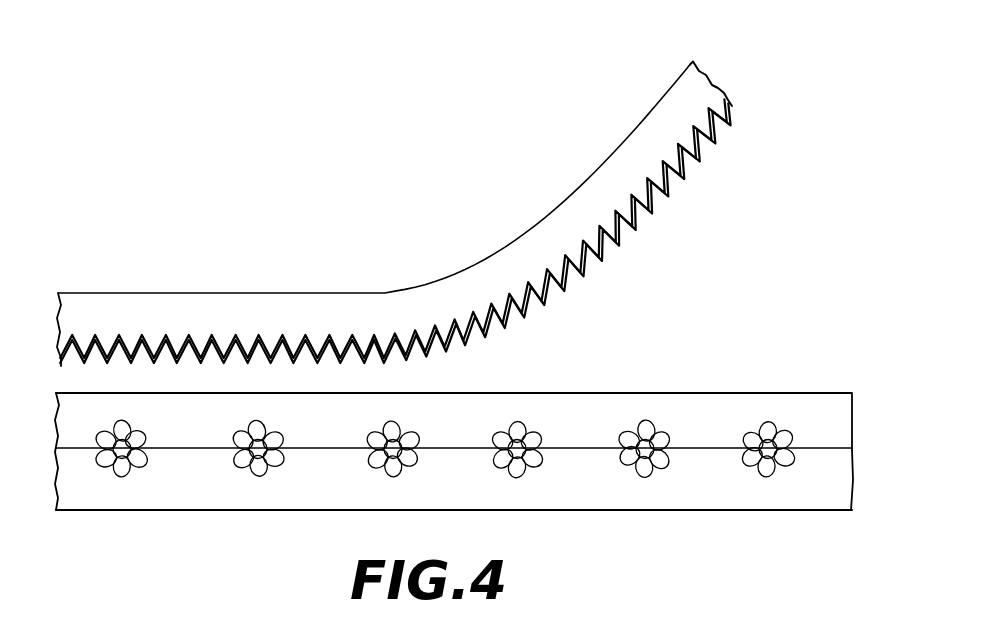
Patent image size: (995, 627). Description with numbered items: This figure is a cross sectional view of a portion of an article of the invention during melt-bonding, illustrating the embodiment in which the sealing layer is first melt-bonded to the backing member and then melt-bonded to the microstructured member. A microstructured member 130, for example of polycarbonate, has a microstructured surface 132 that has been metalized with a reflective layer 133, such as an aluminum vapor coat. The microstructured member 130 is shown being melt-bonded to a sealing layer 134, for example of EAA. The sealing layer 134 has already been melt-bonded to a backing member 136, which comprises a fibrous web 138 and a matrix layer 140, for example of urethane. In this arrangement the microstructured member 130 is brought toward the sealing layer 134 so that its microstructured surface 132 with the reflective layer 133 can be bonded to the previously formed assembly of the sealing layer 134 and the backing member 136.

The microstructured member 130 is at (423, 198).
The microstructured surface 132 is at (697, 111).
The reflective layer 133 is at (713, 92).
The sealing layer 134 is at (461, 452).
The backing member 136 is at (462, 541).
The fibrous web 138 is at (445, 410).
The matrix layer 140 is at (454, 509).